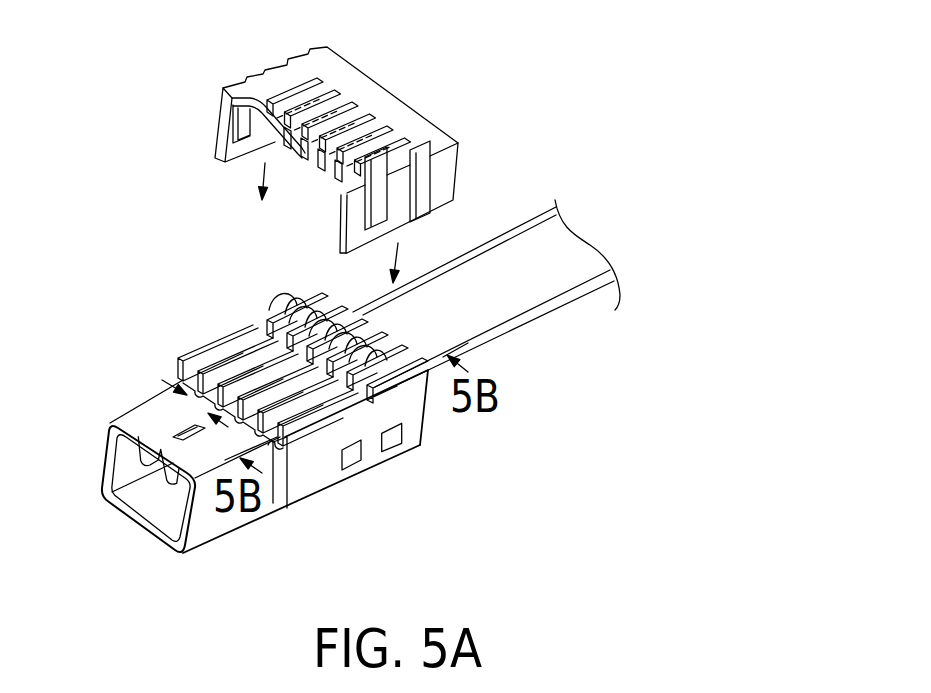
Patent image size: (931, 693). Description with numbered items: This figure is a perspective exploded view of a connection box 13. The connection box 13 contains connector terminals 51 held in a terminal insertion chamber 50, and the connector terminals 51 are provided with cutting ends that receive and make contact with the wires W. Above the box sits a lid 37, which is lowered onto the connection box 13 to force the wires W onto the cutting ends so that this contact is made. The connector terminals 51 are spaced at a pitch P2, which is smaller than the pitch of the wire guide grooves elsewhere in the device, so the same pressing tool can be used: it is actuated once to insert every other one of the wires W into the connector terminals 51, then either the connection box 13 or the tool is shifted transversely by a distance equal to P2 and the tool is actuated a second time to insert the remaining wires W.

The connection box 13 is at (323, 505).
The lid 37 is at (360, 96).
The terminal insertion chamber 50 is at (176, 390).
The connector terminals 51 is at (216, 388).
The wires W is at (548, 243).
The pitch P2 is at (170, 413).